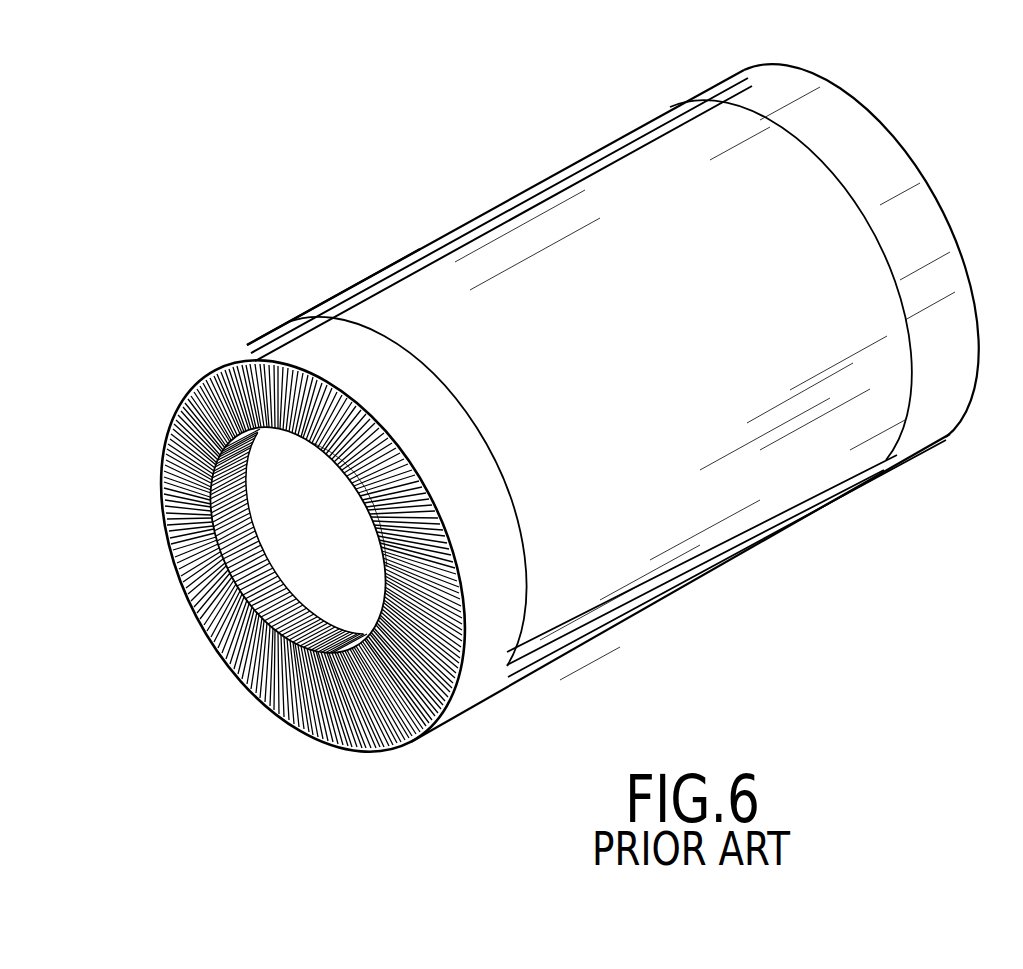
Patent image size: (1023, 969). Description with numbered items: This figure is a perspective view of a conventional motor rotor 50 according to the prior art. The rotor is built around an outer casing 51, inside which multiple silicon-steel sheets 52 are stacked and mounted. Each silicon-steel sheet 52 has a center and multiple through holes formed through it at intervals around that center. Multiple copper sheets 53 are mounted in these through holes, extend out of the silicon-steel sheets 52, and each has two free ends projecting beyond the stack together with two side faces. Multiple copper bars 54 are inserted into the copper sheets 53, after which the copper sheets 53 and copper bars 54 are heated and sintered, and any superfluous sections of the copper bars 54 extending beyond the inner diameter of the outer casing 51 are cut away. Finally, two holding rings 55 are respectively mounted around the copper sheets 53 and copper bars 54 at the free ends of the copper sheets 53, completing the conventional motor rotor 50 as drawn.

The conventional motor rotor 50 is at (758, 587).
The outer casing 51 is at (488, 208).
The silicon-steel sheets 52 is at (300, 518).
The copper sheets 53 is at (232, 678).
The copper bars 54 is at (232, 648).
The holding rings 55 is at (249, 346).